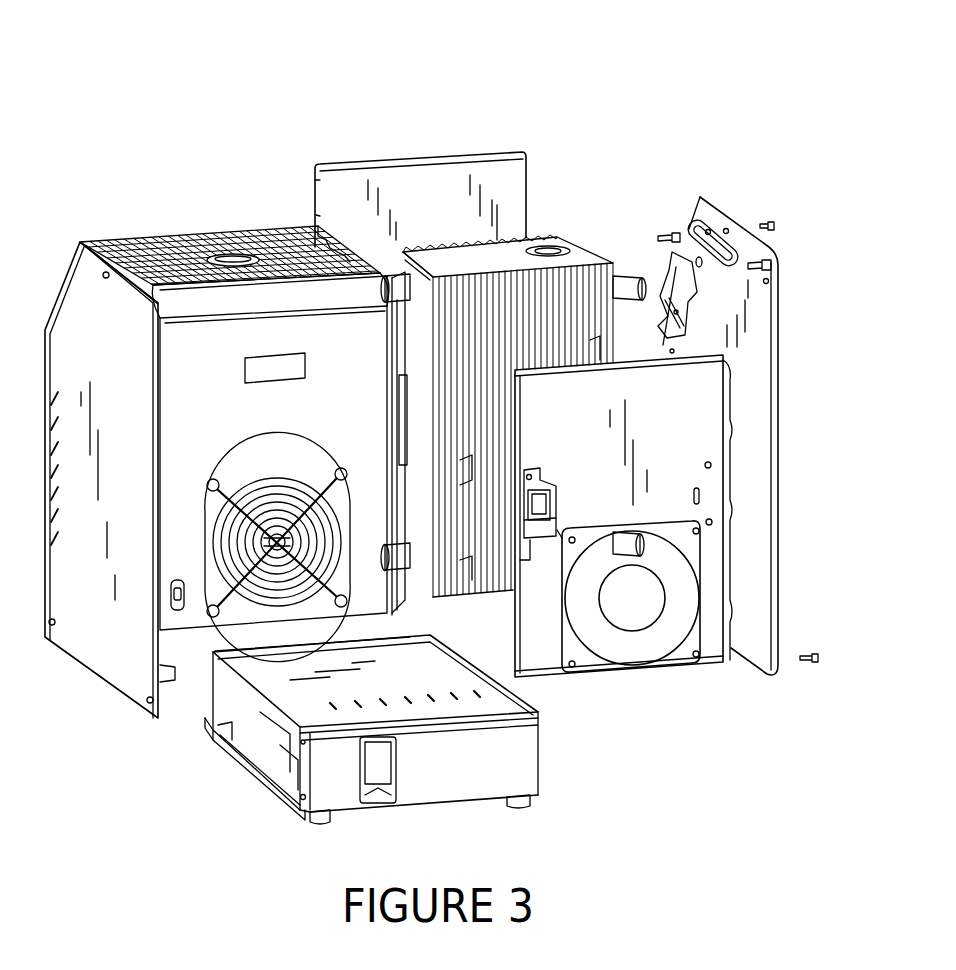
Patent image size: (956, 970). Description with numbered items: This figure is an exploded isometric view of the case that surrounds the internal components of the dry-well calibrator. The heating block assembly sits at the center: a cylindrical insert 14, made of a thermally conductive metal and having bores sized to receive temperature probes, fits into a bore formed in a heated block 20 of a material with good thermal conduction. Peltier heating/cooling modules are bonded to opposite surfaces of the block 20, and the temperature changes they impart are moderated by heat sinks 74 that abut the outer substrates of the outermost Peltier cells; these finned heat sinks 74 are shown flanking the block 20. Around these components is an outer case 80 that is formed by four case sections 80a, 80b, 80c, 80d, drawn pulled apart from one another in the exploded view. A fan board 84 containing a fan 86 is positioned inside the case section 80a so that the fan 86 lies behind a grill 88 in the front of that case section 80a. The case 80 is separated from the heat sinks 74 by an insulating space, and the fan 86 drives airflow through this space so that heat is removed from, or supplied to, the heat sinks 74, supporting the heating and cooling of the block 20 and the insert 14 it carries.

The outer case 80 is at (229, 120).
The case section 80a is at (260, 432).
The case section 80b is at (408, 217).
The case section 80c is at (770, 448).
The case section 80d is at (374, 689).
The cylindrical insert 14 is at (546, 250).
The heated block 20 is at (560, 240).
The heat sinks 74 is at (562, 322).
The fan board 84 is at (636, 424).
The fan 86 is at (621, 611).
The grill 88 is at (237, 478).